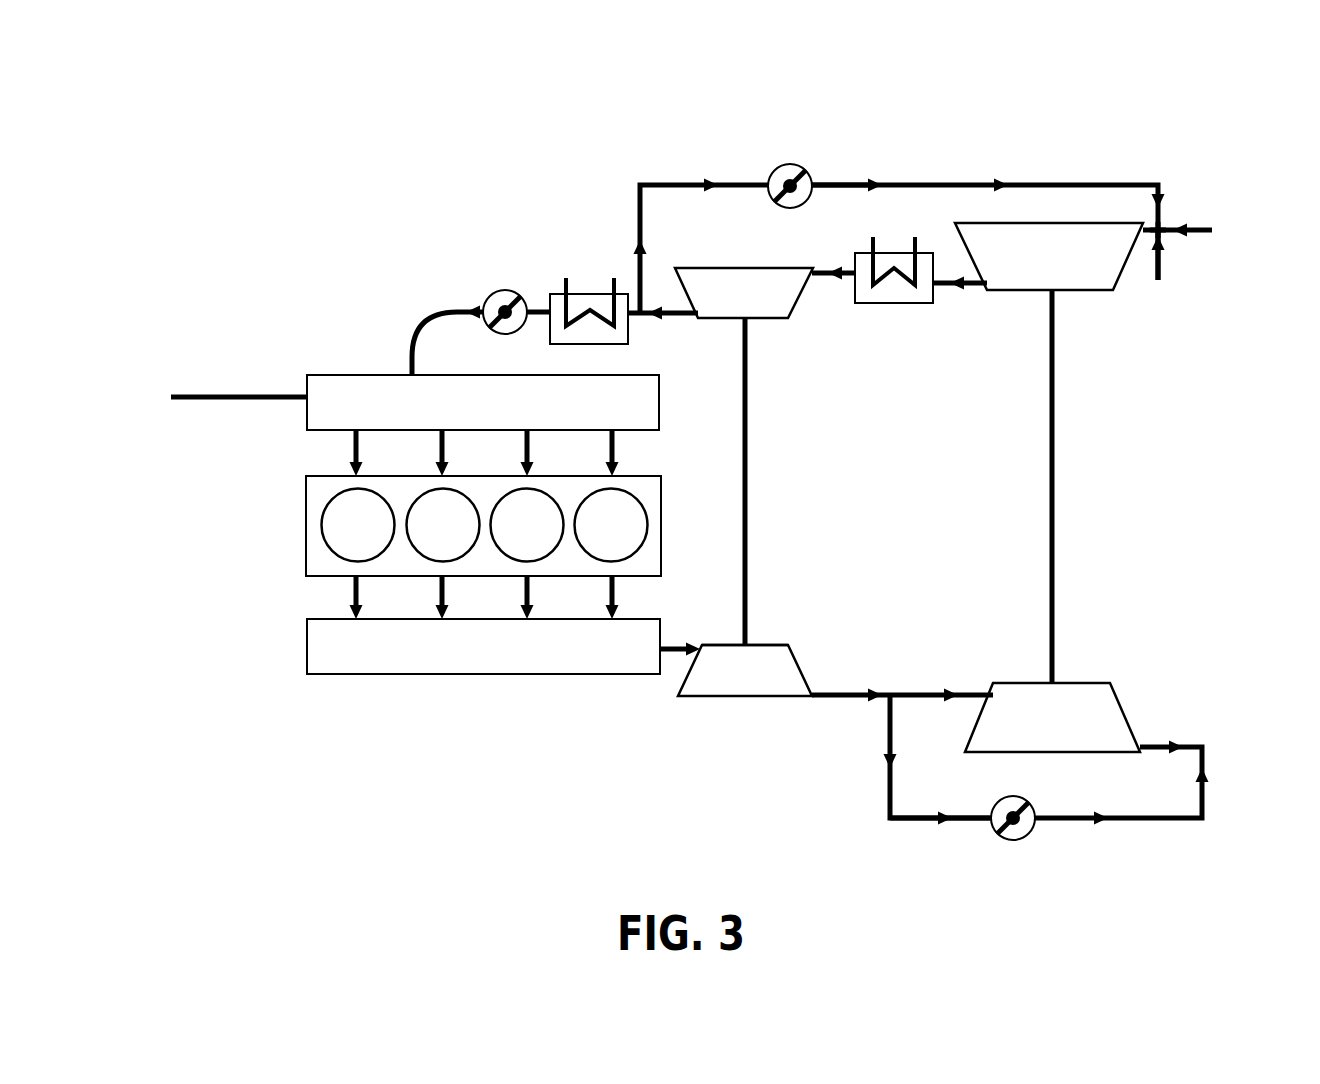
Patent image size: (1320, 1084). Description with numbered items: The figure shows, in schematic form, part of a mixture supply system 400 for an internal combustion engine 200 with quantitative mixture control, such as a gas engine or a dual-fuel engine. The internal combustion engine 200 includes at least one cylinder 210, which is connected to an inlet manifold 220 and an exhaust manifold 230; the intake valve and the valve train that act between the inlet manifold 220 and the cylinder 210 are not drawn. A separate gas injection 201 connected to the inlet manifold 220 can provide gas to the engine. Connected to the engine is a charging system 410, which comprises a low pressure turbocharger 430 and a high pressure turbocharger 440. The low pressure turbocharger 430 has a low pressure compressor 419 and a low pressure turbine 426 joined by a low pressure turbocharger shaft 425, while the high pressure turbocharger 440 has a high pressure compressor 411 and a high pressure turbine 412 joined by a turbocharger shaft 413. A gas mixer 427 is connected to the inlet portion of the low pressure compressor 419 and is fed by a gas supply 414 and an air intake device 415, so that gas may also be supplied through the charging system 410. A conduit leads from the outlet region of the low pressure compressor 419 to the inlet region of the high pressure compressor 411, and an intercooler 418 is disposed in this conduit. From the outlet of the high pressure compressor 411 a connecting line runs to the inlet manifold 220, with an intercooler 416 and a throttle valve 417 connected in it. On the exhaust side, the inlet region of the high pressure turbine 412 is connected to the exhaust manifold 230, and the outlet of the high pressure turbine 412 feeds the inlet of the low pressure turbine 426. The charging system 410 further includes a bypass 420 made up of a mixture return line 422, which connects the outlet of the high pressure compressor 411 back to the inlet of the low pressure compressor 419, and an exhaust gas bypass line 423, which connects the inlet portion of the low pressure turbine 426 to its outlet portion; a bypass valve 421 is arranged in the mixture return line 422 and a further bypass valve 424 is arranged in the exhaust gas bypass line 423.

The internal combustion engine 200 is at (405, 418).
The gas injection 201 is at (211, 388).
The cylinder 210 is at (584, 492).
The inlet manifold 220 is at (353, 370).
The exhaust manifold 230 is at (305, 647).
The mixture supply system 400 is at (832, 485).
The charging system 410 is at (687, 712).
The high pressure compressor 411 is at (805, 302).
The high pressure turbine 412 is at (763, 642).
The turbocharger shaft 413 is at (748, 510).
The gas supply 414 is at (1158, 293).
The air intake device 415 is at (1183, 220).
The intercooler 416 is at (600, 280).
The throttle valve 417 is at (492, 287).
The intercooler 418 is at (923, 315).
The low pressure compressor 419 is at (1093, 302).
The bypass 420 is at (942, 175).
The bypass valve 421 is at (790, 158).
The mixture return line 422 is at (842, 172).
The exhaust gas bypass line 423 is at (917, 827).
The bypass valve 424 is at (990, 847).
The low pressure turbocharger shaft 425 is at (1058, 500).
The low pressure turbine 426 is at (1062, 683).
The gas mixer 427 is at (1167, 238).
The low pressure turbocharger 430 is at (1051, 487).
The high pressure turbocharger 440 is at (722, 705).